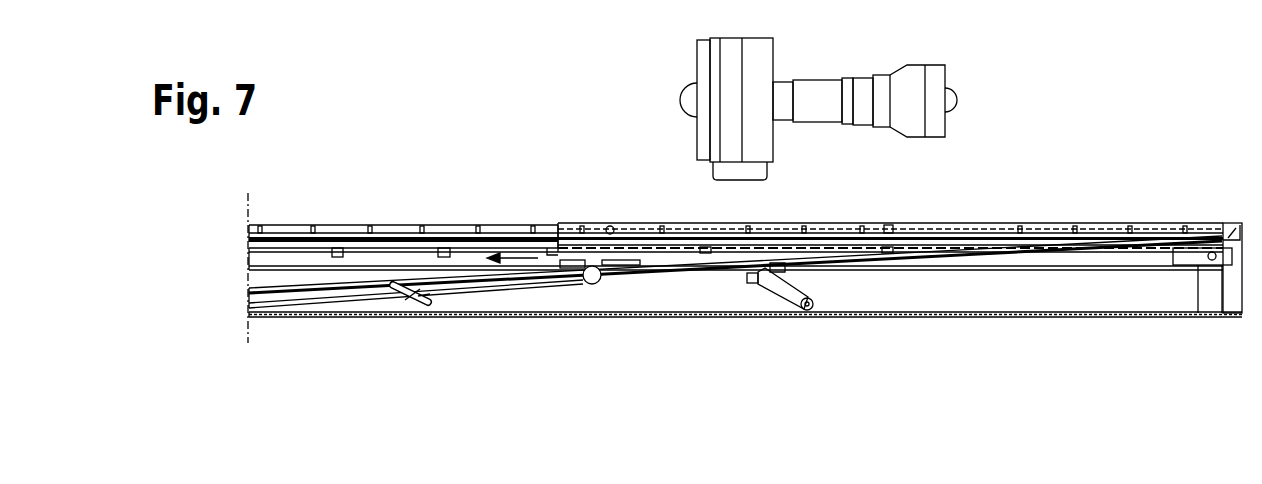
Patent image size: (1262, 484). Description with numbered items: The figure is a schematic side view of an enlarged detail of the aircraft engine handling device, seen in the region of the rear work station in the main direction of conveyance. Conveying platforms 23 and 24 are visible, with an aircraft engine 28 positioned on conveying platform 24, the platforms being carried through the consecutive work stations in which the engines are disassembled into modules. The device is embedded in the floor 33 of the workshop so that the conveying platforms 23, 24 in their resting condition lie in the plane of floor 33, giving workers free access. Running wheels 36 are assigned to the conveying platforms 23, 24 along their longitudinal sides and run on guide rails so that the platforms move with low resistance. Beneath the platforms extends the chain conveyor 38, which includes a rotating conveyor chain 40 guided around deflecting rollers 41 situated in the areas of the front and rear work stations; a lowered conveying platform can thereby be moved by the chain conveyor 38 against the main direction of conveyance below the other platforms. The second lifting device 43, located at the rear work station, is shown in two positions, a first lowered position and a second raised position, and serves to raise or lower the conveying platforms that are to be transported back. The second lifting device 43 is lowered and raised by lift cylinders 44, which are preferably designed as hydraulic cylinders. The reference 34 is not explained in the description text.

The conveying platform 23 is at (447, 227).
The conveying platform 24 is at (1007, 222).
The aircraft engine 28 is at (758, 70).
The floor 33 is at (1232, 230).
The coupling block 34 is at (600, 264).
The running wheels 36 is at (367, 233).
The chain conveyor 38 is at (323, 320).
The conveyor chain 40 is at (263, 263).
The deflecting rollers 41 is at (592, 284).
The second lifting device 43 is at (880, 266).
The lift cylinders 44 is at (780, 290).